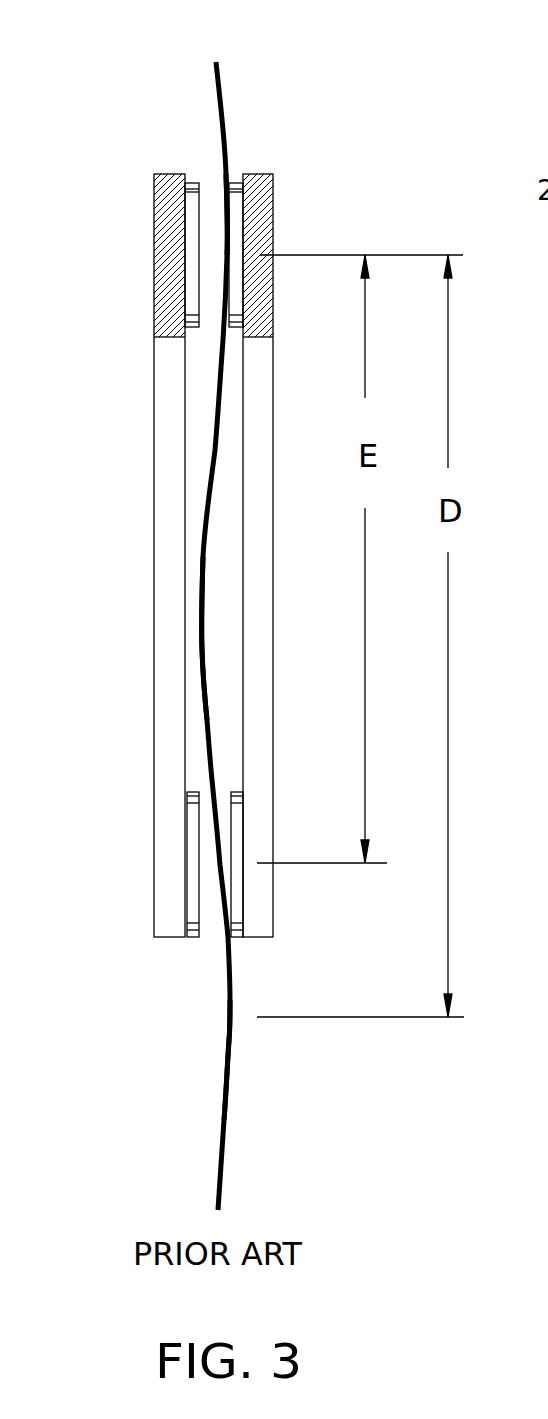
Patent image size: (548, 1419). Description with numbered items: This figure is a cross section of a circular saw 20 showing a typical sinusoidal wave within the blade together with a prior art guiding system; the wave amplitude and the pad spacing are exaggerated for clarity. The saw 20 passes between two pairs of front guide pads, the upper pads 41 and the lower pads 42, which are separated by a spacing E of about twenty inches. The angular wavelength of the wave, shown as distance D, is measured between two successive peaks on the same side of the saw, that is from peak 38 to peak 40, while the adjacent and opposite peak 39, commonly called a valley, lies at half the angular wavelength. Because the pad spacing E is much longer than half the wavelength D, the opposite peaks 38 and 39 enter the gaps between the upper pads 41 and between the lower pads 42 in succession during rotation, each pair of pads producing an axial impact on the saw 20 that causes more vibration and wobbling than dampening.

The circular saw 20 is at (220, 75).
The peak 38 is at (222, 248).
The opposite peak 39 is at (193, 632).
The peak 40 is at (227, 1018).
The upper pads 41 is at (192, 181).
The lower pads 42 is at (195, 940).